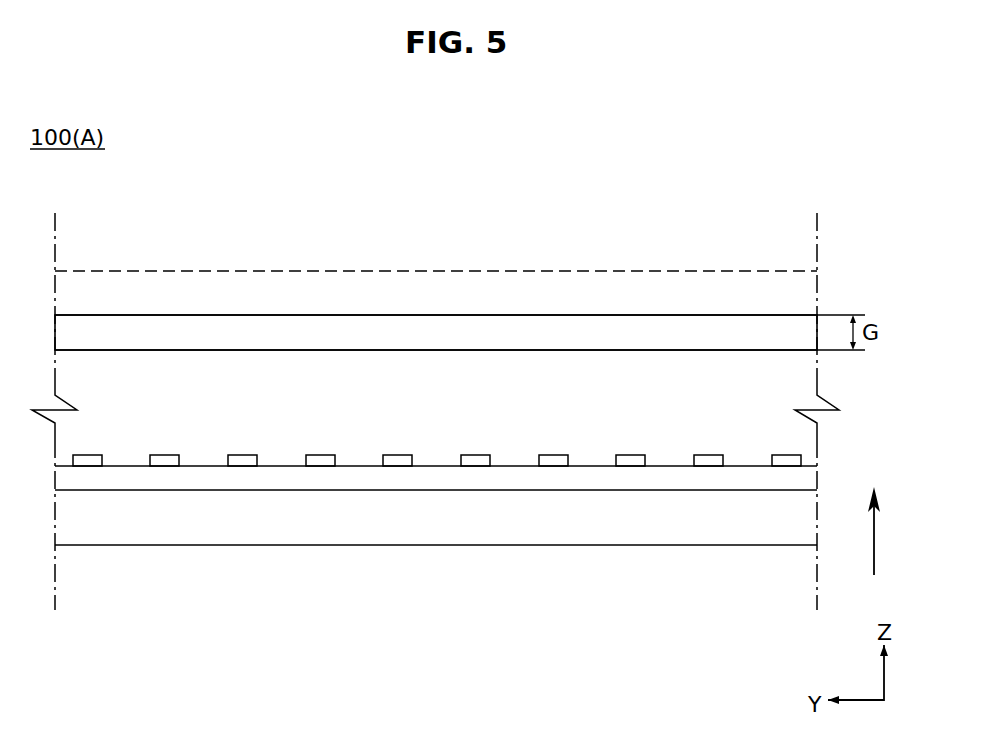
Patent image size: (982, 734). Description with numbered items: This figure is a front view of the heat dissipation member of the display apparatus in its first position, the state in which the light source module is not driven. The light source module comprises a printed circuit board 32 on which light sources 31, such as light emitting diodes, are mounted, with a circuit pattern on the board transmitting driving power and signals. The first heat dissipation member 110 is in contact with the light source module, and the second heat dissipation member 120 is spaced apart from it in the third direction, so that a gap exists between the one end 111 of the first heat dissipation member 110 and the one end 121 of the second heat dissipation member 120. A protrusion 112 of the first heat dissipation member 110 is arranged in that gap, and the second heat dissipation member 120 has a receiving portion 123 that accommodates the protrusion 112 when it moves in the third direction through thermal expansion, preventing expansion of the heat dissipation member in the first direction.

The first heat dissipation member 110 is at (476, 478).
The one end of the first heat dissipation member 111 is at (585, 350).
The protrusion 112 is at (512, 323).
The second heat dissipation member 120 is at (436, 271).
The one end of the second heat dissipation member 121 is at (363, 315).
The receiving portion 123 is at (223, 297).
The light source 31 is at (553, 463).
The printed circuit board 32 is at (437, 480).